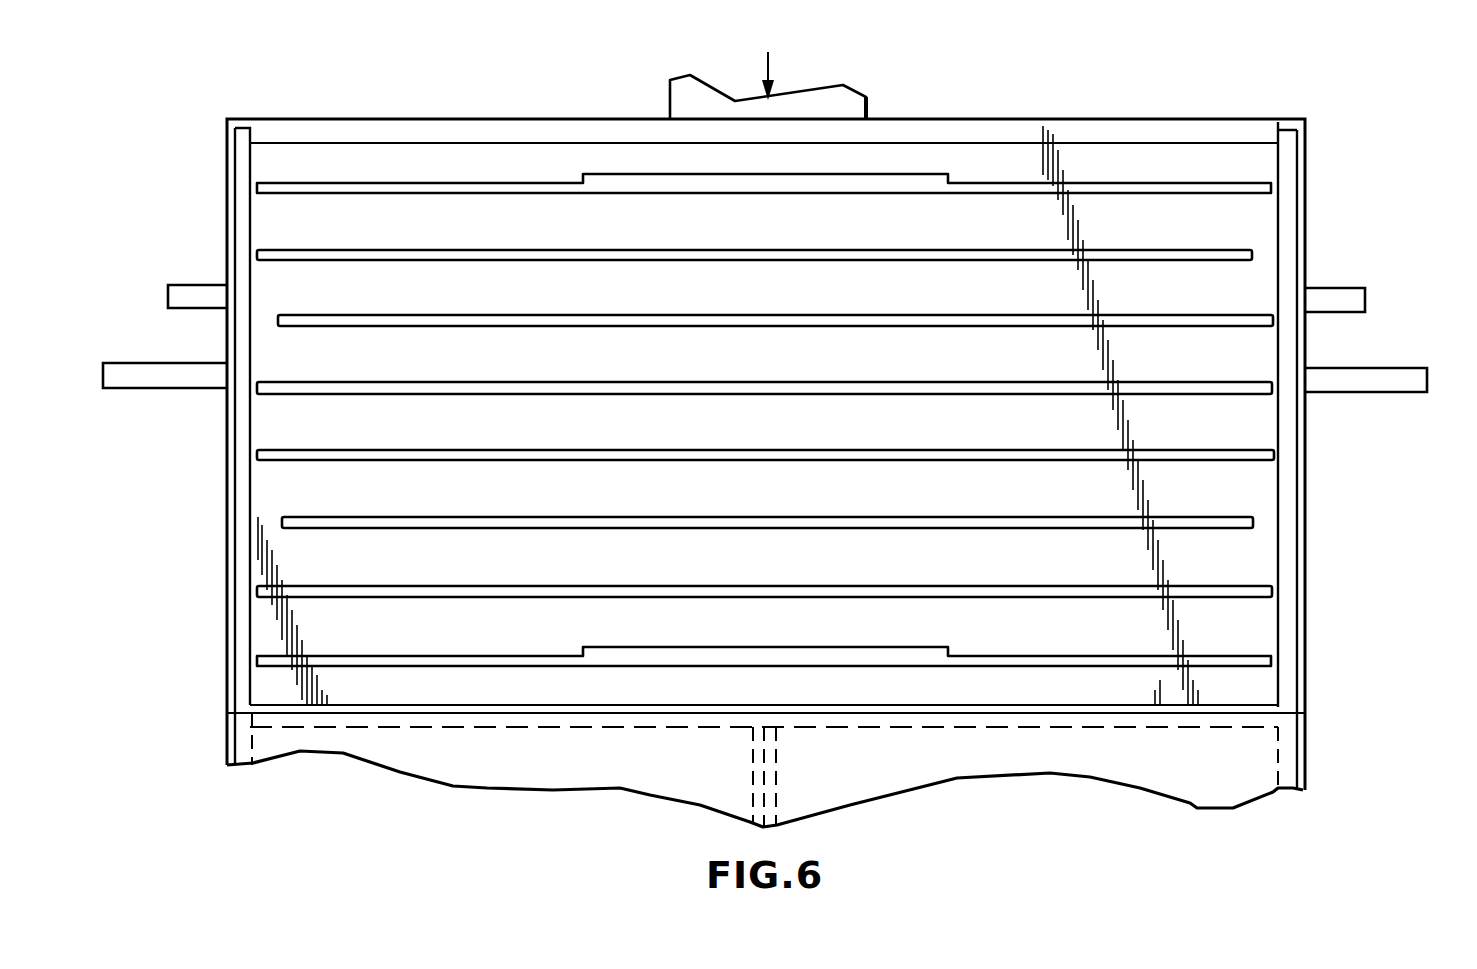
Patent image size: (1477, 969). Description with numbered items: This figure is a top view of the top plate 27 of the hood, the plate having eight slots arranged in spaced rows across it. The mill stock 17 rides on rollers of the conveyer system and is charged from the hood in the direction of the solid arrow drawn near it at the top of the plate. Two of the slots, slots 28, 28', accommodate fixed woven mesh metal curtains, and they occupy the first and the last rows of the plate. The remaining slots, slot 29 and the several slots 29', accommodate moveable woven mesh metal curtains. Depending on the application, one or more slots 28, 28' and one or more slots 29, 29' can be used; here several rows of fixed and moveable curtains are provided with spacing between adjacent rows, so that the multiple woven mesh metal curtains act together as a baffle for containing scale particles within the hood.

The mill stock 17 is at (847, 110).
The top plate 27 is at (1083, 157).
The slot 28 is at (764, 135).
The slot 28' is at (764, 635).
The slot 29 is at (754, 228).
The slot 29' is at (765, 431).